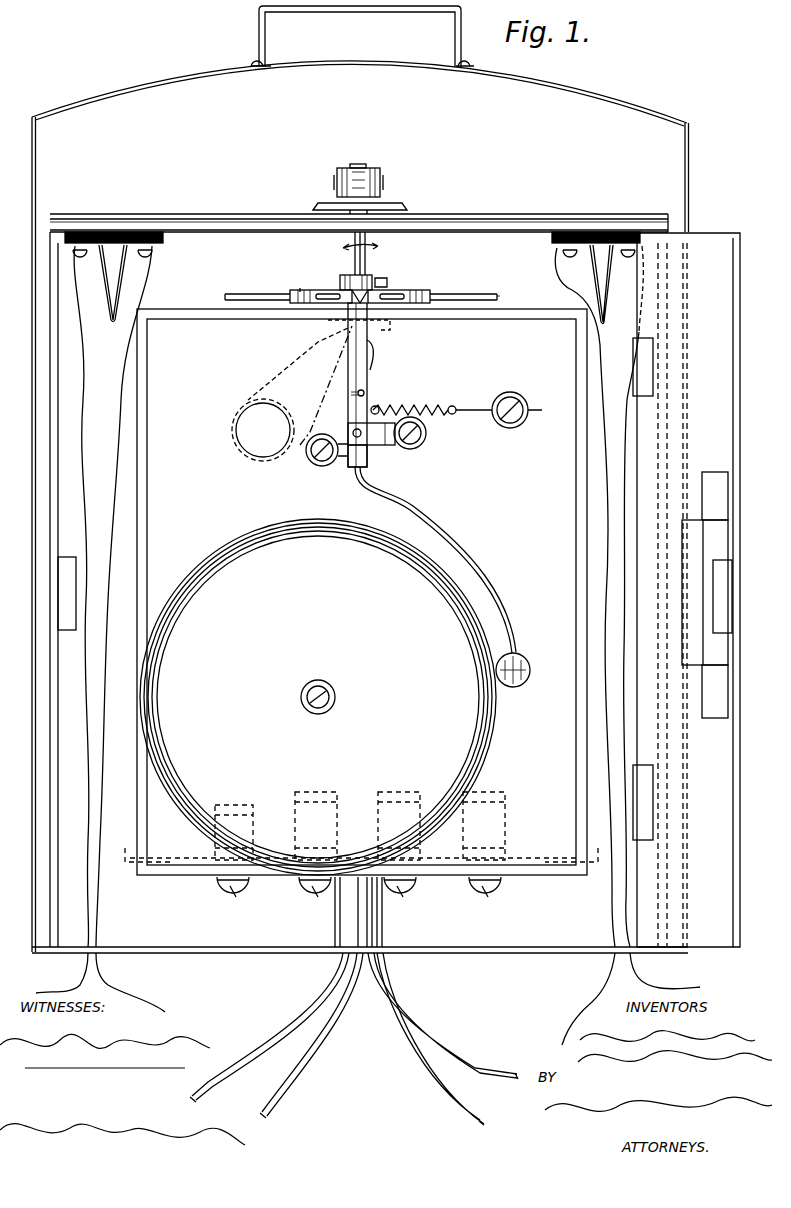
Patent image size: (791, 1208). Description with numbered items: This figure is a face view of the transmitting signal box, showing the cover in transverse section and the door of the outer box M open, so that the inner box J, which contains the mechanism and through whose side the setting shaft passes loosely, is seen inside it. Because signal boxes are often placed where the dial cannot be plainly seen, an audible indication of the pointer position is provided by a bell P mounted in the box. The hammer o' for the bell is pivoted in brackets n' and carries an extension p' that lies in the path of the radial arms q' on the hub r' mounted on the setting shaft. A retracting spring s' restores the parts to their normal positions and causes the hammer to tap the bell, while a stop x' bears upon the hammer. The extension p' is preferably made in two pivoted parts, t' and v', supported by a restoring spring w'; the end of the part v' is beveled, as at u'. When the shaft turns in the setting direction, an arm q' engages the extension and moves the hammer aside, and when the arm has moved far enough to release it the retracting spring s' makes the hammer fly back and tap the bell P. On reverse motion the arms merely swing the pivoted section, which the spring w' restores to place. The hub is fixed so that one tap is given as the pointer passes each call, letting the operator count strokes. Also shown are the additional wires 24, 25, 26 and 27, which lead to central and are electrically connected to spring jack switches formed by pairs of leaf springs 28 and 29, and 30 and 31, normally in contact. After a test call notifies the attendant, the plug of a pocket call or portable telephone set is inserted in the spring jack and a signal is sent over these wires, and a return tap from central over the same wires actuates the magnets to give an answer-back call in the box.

The bell P is at (318, 697).
The outer box M is at (470, 232).
The inner box J is at (510, 293).
The radial arms q' is at (361, 287).
The hub r' is at (292, 278).
The beveled end u' is at (350, 275).
The pivoted part of hammer extension v' is at (300, 385).
The hammer extension p' is at (365, 345).
The restoring spring w' is at (376, 385).
The pivoted part of hammer extension t' is at (290, 425).
The retracting spring s' is at (456, 402).
The stop x' is at (327, 463).
The hammer o' is at (371, 460).
The brackets n' is at (387, 452).
The additional wire 24 is at (88, 812).
The additional wire 25 is at (104, 812).
The additional wire 26 is at (608, 895).
The additional wire 27 is at (628, 873).
The leaf spring 28 is at (111, 305).
The leaf spring 29 is at (117, 303).
The leaf spring 30 is at (585, 597).
The leaf spring 31 is at (612, 291).